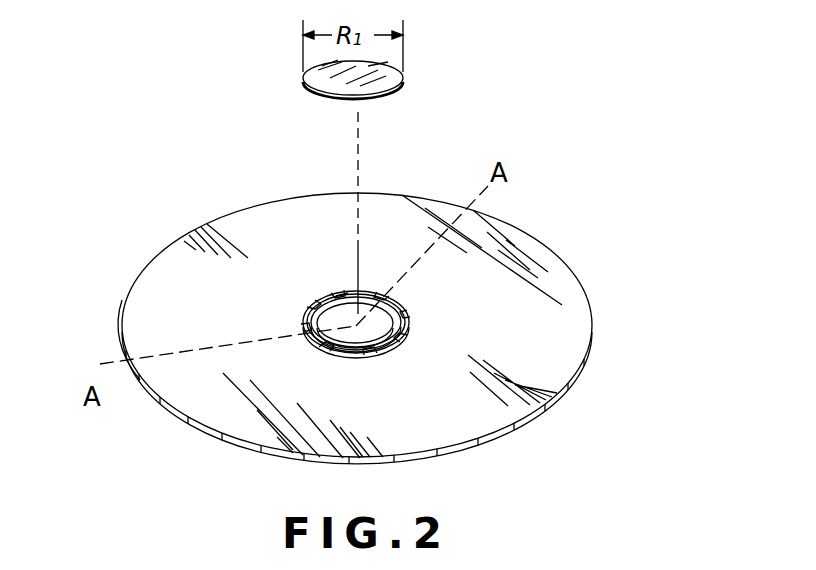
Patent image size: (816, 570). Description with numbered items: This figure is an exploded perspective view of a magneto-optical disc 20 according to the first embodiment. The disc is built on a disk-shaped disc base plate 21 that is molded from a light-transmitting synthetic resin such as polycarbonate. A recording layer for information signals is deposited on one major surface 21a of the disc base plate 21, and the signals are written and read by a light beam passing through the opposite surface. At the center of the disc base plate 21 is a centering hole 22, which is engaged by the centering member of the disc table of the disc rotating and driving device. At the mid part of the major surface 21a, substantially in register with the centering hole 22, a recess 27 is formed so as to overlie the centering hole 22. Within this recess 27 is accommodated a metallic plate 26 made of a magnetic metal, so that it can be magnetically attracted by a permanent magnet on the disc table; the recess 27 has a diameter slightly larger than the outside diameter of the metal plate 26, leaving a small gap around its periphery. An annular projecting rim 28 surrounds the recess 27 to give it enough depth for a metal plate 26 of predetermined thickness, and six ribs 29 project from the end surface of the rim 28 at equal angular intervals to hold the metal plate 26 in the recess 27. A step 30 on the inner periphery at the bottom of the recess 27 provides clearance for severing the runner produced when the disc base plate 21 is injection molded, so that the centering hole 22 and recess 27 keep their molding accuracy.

The magneto-optical disc 20 is at (574, 232).
The disc base plate 21 is at (592, 334).
The major surface 21a is at (140, 322).
The centering hole 22 is at (402, 325).
The metal plate 26 is at (396, 84).
The recess 27 is at (336, 292).
The annular projecting rim 28 is at (372, 356).
The ribs 29 is at (316, 300).
The step 30 is at (348, 293).